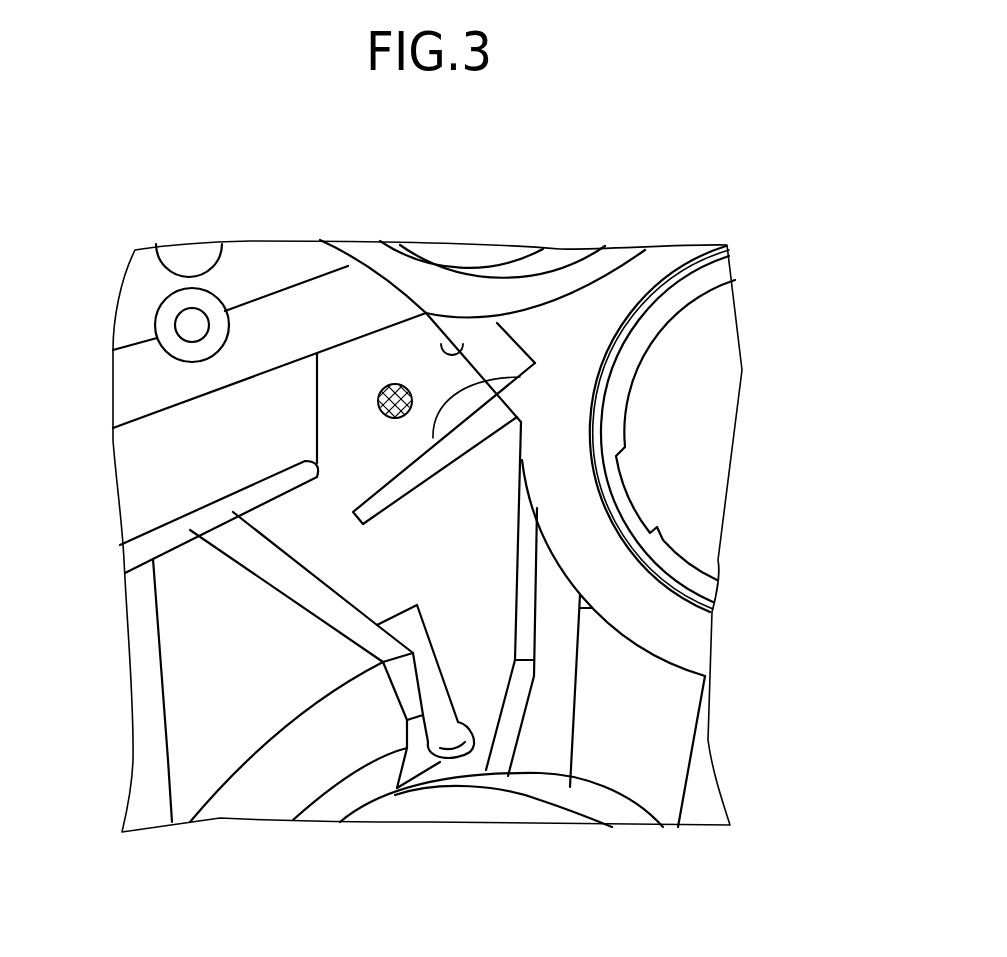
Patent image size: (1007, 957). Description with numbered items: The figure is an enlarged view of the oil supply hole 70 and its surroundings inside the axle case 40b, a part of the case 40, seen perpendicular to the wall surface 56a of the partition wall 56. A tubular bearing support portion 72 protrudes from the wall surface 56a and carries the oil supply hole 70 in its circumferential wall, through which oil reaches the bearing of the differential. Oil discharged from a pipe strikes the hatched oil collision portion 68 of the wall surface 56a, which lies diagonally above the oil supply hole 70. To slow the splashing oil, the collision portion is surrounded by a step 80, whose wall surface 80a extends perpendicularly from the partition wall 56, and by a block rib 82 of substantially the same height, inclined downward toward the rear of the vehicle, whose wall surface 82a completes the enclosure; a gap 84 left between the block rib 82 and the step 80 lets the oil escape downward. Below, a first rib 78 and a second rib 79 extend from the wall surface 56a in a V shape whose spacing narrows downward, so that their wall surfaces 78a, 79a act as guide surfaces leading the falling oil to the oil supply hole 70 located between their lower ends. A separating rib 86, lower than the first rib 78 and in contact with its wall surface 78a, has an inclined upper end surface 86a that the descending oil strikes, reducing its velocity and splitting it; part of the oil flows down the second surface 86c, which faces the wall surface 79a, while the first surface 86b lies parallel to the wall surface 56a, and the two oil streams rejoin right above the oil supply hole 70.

The case 40 is at (580, 395).
The axle case 40b is at (650, 246).
The partition wall 56 is at (653, 643).
The wall surface 56a is at (460, 523).
The oil collision portion 68 is at (404, 380).
The oil supply hole 70 is at (437, 750).
The bearing support portion 72 is at (563, 823).
The first rib 78 is at (268, 609).
The wall surface of the first rib 78a is at (303, 563).
The second rib 79 is at (545, 629).
The wall surface of the second rib 79a is at (525, 597).
The step 80 is at (369, 312).
The wall surface of the step 80a is at (318, 352).
The block rib 82 is at (459, 470).
The wall surface of the block rib 82a is at (520, 377).
The gap 84 is at (330, 498).
The separating rib 86 is at (411, 675).
The upper end surface 86a is at (395, 607).
The first surface 86b is at (378, 681).
The second surface 86c is at (442, 660).